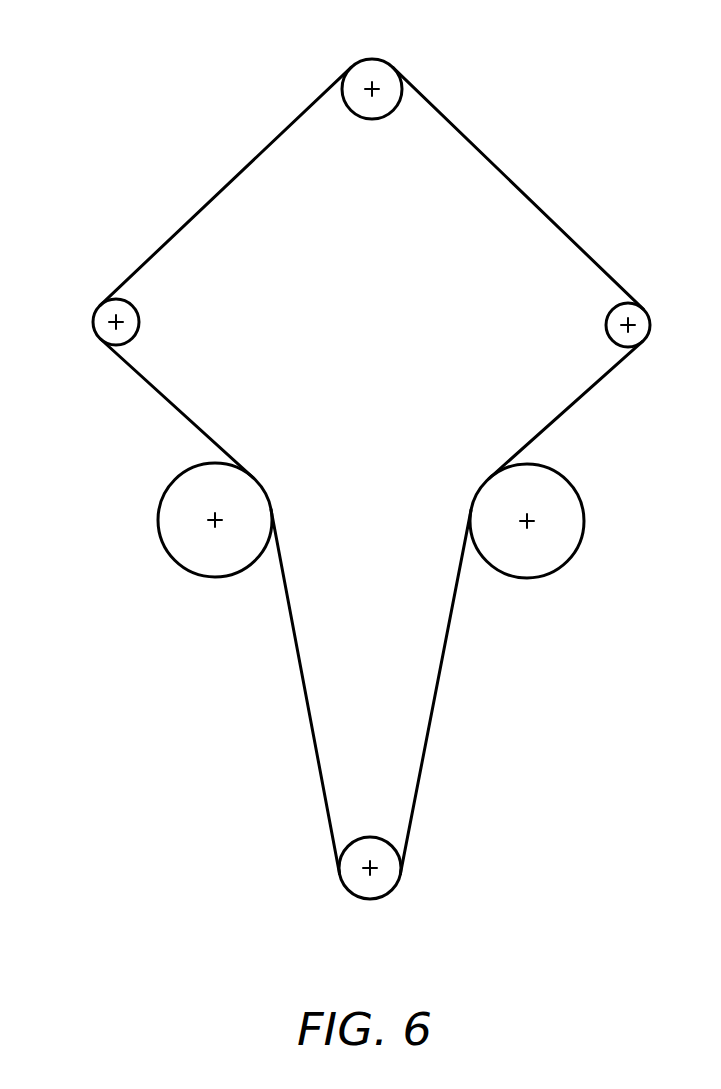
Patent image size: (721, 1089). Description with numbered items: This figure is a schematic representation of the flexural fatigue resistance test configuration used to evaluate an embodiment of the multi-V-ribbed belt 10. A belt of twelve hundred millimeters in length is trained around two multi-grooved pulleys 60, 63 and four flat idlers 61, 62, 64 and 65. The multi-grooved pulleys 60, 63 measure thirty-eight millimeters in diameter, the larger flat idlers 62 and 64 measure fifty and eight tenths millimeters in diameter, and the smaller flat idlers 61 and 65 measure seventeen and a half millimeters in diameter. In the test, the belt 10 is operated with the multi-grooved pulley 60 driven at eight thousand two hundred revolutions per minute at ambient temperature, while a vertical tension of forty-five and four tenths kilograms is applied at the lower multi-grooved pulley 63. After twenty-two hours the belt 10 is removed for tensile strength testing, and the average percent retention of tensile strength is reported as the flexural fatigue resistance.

The multi-V-ribbed belt 10 is at (242, 172).
The multi-grooved pulley 60 is at (381, 70).
The flat idler 61 is at (102, 328).
The flat idler 62 is at (192, 472).
The multi-grooved pulley 63 is at (390, 883).
The flat idler 64 is at (555, 478).
The flat idler 65 is at (638, 315).